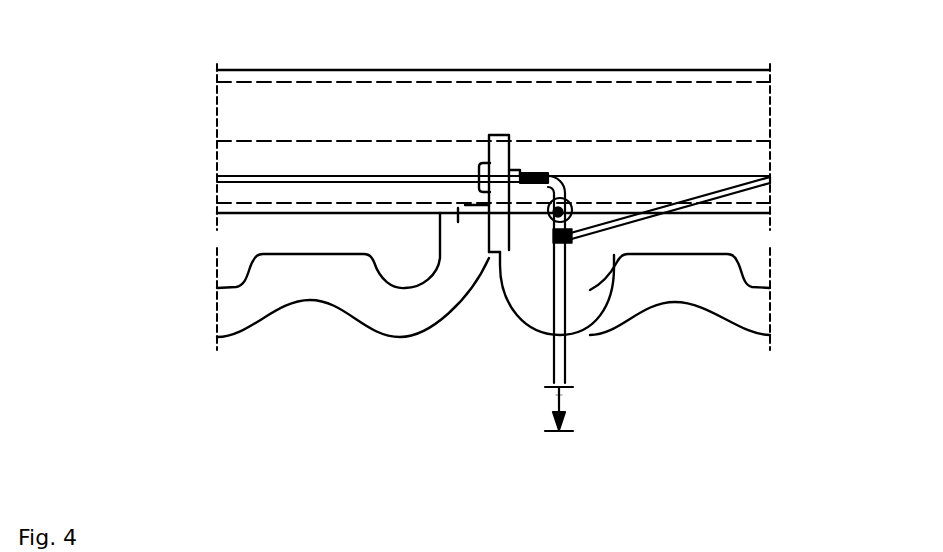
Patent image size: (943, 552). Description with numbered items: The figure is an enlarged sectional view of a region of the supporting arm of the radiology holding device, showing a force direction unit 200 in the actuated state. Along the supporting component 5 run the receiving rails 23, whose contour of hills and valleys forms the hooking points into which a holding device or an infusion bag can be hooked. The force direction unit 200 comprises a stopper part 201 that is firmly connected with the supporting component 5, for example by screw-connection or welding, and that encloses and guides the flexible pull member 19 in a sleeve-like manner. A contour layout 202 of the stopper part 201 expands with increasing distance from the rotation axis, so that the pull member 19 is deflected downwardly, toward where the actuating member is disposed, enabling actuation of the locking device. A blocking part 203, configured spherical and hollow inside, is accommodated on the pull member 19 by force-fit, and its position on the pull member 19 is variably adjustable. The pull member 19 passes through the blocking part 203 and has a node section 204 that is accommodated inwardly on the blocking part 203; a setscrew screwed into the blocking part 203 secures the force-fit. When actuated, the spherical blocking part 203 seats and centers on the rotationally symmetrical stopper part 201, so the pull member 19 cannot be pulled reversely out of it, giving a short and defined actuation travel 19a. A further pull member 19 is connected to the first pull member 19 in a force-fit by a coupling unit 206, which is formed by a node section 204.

The supporting component 5 is at (735, 112).
The flexible pull member 19 is at (233, 181).
The actuation travel 19a is at (557, 405).
The receiving rail 23 is at (247, 293).
The force direction unit 200 is at (521, 112).
The stopper part 201 is at (505, 238).
The contour layout 202 is at (532, 168).
The blocking part 203 is at (568, 200).
The node section 204 is at (562, 228).
The coupling unit 206 is at (569, 245).